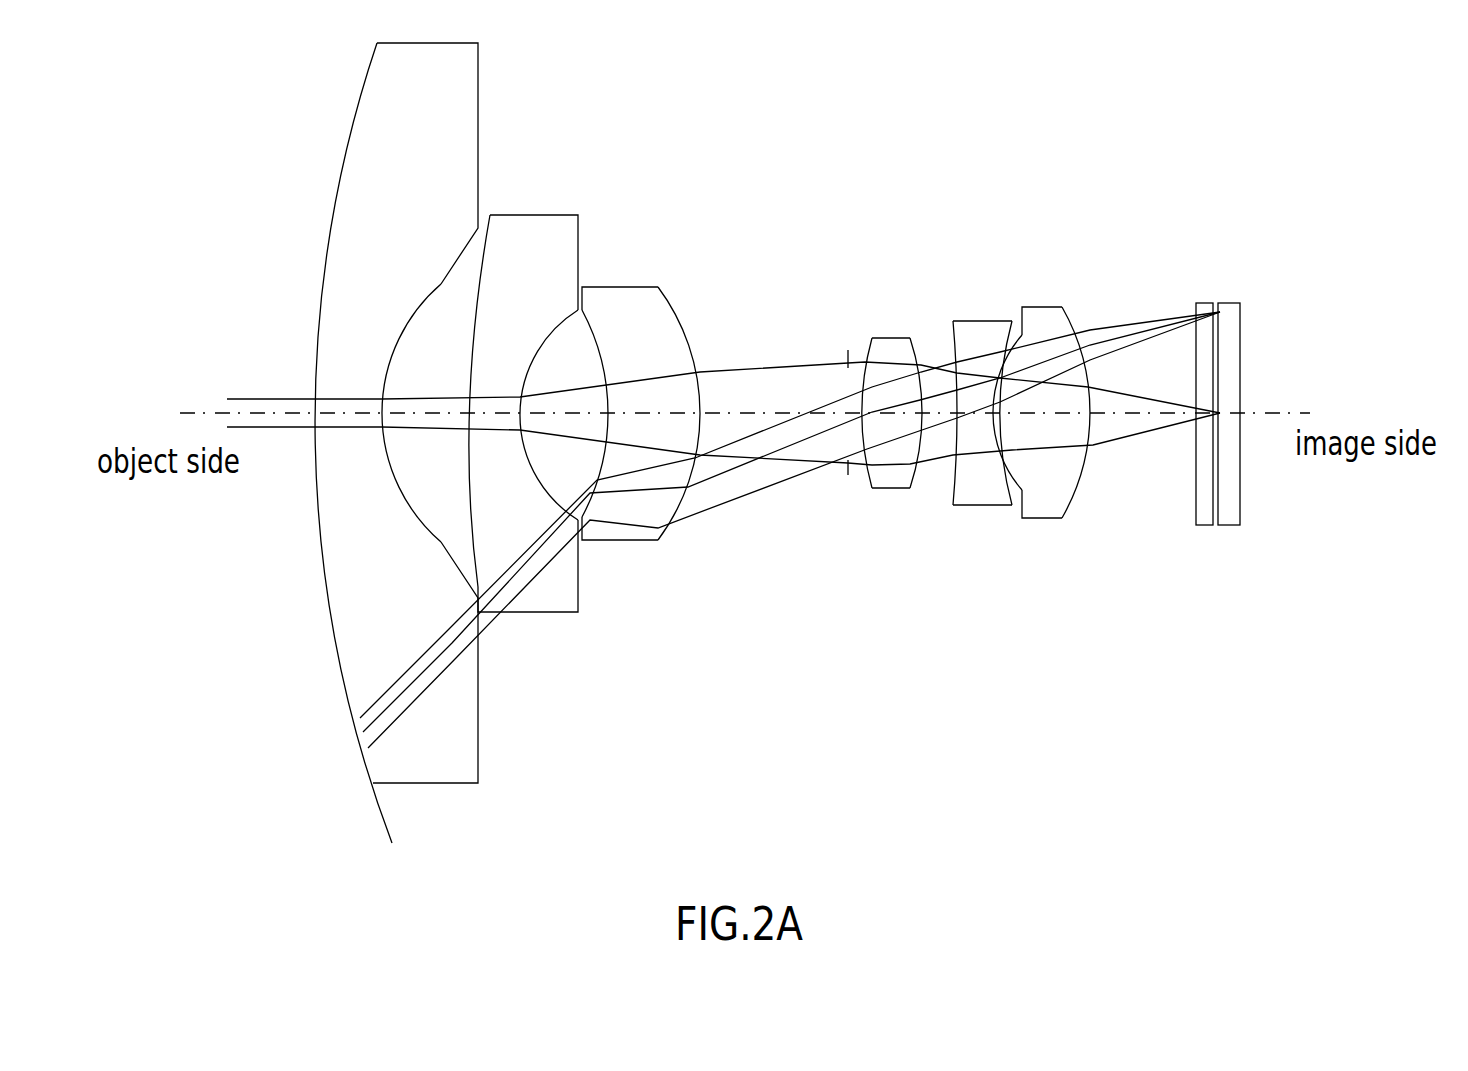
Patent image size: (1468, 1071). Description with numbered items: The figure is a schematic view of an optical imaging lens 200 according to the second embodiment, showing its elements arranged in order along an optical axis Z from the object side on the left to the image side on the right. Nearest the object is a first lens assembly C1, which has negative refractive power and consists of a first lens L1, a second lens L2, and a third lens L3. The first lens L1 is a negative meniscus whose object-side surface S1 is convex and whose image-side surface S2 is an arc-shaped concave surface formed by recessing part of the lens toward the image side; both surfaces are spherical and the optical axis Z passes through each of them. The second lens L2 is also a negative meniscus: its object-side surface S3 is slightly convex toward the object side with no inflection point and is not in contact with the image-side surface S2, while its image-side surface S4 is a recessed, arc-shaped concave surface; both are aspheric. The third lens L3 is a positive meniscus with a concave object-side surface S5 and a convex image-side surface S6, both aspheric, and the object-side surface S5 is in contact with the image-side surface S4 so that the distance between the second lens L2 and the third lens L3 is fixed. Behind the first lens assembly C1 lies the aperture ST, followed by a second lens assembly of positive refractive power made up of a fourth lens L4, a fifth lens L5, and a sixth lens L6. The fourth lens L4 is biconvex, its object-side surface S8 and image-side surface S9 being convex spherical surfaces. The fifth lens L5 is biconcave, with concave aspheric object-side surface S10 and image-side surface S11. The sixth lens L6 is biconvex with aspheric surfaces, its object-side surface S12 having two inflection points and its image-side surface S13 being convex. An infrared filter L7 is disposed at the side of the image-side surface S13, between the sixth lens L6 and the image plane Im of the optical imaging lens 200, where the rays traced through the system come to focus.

The optical imaging lens 200 is at (288, 256).
The first lens assembly C1 is at (660, 160).
The first lens L1 is at (358, 172).
The second lens L2 is at (520, 238).
The third lens L3 is at (617, 300).
The fourth lens L4 is at (885, 353).
The fifth lens L5 is at (975, 335).
The sixth lens L6 is at (1037, 330).
The infrared filter L7 is at (1205, 302).
The object-side surface of the first lens S1 is at (319, 474).
The image-side surface of the first lens S2 is at (441, 285).
The object-side surface of the second lens S3 is at (462, 525).
The image-side surface of the second lens S4 is at (562, 497).
The object-side surface of the third lens S5 is at (581, 310).
The image-side surface of the third lens S6 is at (692, 334).
The object-side surface of the fourth lens S8 is at (865, 472).
The image-side surface of the fourth lens S9 is at (915, 462).
The object-side surface of the fifth lens S10 is at (958, 388).
The image-side surface of the fifth lens S11 is at (1000, 380).
The object-side surface of the sixth lens S12 is at (1008, 482).
The image-side surface of the sixth lens S13 is at (1078, 478).
The aperture ST is at (840, 326).
The image plane Im is at (1237, 370).
The optical axis Z is at (726, 410).